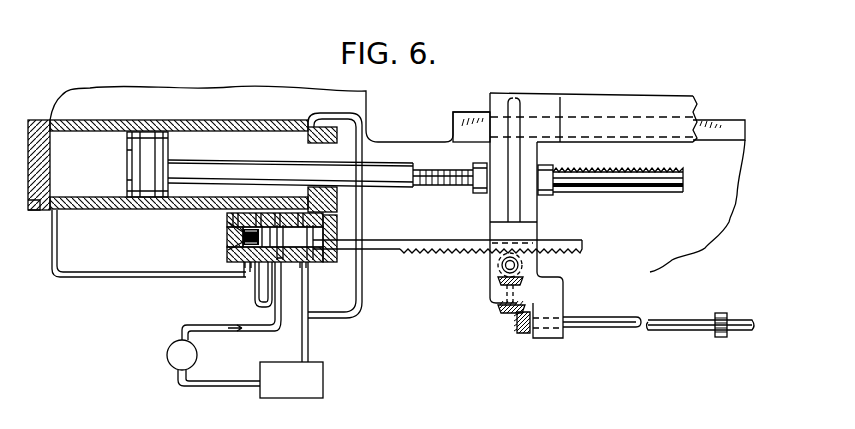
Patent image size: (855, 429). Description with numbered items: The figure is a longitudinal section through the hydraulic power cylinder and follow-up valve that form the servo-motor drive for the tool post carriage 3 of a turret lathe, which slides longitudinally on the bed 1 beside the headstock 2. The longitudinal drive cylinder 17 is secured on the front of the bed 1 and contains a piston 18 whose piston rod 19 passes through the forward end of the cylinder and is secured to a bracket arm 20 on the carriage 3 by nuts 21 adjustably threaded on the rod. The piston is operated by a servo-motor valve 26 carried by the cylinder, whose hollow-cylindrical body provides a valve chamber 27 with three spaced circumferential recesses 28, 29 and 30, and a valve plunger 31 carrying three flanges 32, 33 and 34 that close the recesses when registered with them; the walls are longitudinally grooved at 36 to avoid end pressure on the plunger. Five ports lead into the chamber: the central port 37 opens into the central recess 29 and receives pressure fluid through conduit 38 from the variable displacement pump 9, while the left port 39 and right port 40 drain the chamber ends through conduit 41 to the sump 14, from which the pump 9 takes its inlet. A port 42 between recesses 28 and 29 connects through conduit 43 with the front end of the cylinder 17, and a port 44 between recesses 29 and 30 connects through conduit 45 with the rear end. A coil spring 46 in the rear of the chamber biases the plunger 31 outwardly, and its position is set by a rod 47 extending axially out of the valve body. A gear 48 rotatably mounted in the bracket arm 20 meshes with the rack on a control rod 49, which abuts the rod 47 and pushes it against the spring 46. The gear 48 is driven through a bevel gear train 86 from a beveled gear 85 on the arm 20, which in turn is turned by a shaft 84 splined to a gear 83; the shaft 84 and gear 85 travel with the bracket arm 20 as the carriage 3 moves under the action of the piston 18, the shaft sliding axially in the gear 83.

The bed 1 is at (731, 114).
The headstock 2 is at (368, 112).
The tool post carriage 3 is at (624, 97).
The variable displacement pump 9 is at (160, 358).
The sump 14 is at (323, 374).
The longitudinal drive cylinder 17 is at (200, 120).
The piston 18 is at (147, 140).
The piston rod 19 is at (395, 162).
The bracket arm 20 is at (540, 222).
The nuts 21 is at (472, 191).
The servo-motor valve 26 is at (221, 242).
The valve chamber 27 is at (258, 213).
The circumferential recess 28 is at (236, 213).
The central recess 29 is at (278, 213).
The circumferential recess 30 is at (337, 200).
The valve plunger 31 is at (228, 225).
The end flange 32 is at (240, 253).
The central flange 33 is at (300, 213).
The end flange 34 is at (330, 255).
The longitudinal grooves 36 is at (250, 264).
The central port 37 is at (288, 291).
The conduit 38 is at (204, 319).
The left port 39 is at (248, 268).
The right port 40 is at (305, 278).
The conduit 41 is at (309, 333).
The port 42 is at (262, 237).
The conduit 43 is at (362, 300).
The port 44 is at (288, 242).
The conduit 45 is at (72, 282).
The coil spring 46 is at (233, 243).
The rod 47 is at (350, 243).
The gear 48 is at (499, 271).
The control rod 49 is at (462, 258).
The gear 83 is at (724, 310).
The shaft 84 is at (620, 316).
The beveled gear 85 is at (518, 331).
The bevel gear train 86 is at (500, 311).